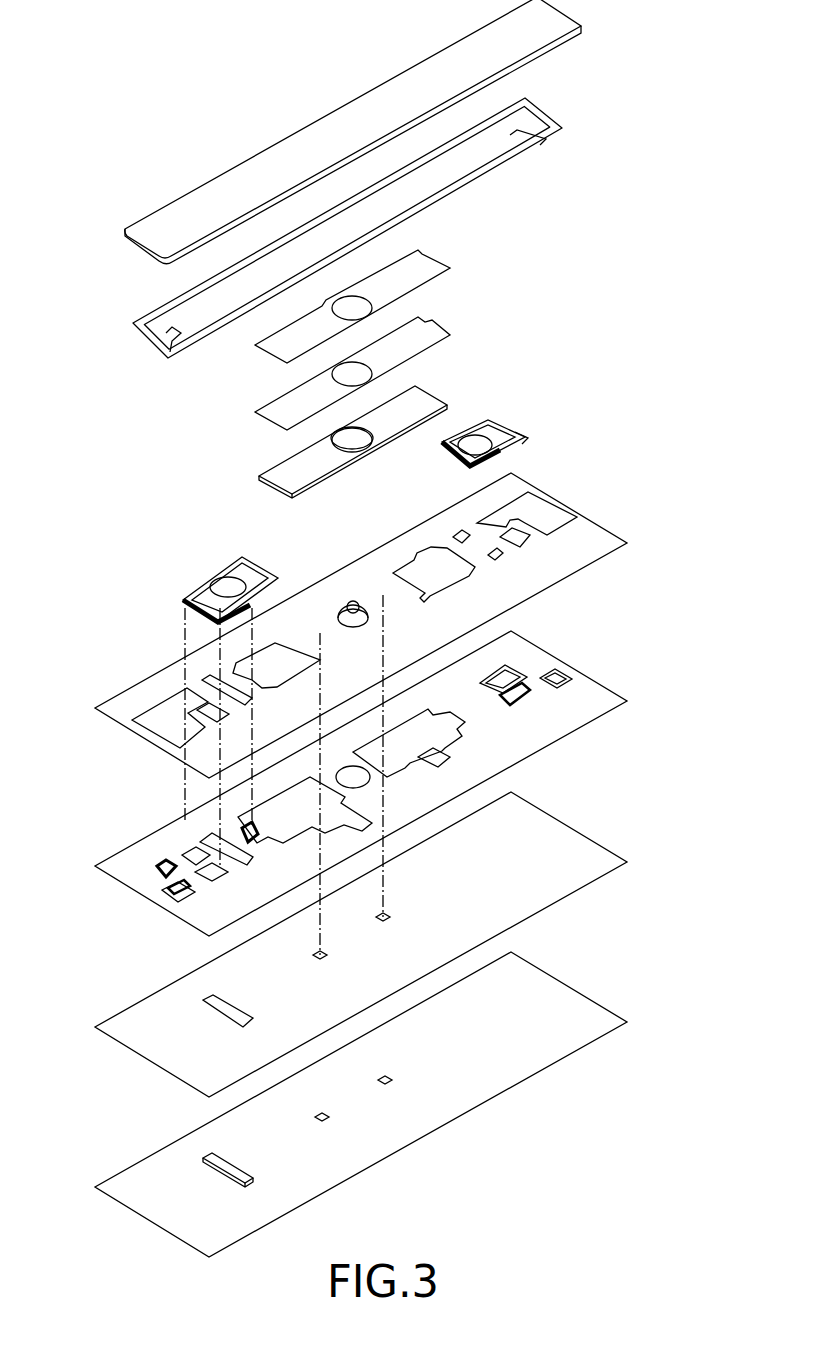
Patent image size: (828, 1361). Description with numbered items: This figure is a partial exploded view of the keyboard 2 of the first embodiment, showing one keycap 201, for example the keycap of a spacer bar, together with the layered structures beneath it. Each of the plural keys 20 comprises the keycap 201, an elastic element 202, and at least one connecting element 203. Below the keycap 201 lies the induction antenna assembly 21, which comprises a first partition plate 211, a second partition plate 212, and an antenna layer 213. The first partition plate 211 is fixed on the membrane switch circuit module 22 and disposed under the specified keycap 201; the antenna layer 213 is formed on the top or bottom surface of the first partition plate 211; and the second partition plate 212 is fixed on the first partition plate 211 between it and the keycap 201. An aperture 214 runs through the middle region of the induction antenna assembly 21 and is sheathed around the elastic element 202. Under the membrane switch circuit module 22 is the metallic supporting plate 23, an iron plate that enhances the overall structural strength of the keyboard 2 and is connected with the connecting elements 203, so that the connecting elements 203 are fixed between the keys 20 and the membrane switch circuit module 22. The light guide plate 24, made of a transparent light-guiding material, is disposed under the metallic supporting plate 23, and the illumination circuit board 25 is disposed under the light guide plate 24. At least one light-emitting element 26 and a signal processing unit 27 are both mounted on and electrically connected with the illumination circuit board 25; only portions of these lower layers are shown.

The keyboard 2 is at (138, 47).
The key 20 is at (641, 130).
The induction antenna assembly 21 is at (641, 252).
The keycap 201 is at (240, 178).
The elastic element 202 is at (350, 603).
The connecting element 203 is at (157, 312).
The first partition plate 211 is at (423, 405).
The second partition plate 212 is at (427, 270).
The antenna layer 213 is at (435, 333).
The aperture 214 is at (352, 310).
The membrane switch circuit module 22 is at (588, 538).
The metallic supporting plate 23 is at (588, 696).
The light guide plate 24 is at (588, 854).
The illumination circuit board 25 is at (588, 1016).
The light-emitting element 26 is at (390, 1078).
The signal processing unit 27 is at (225, 1168).